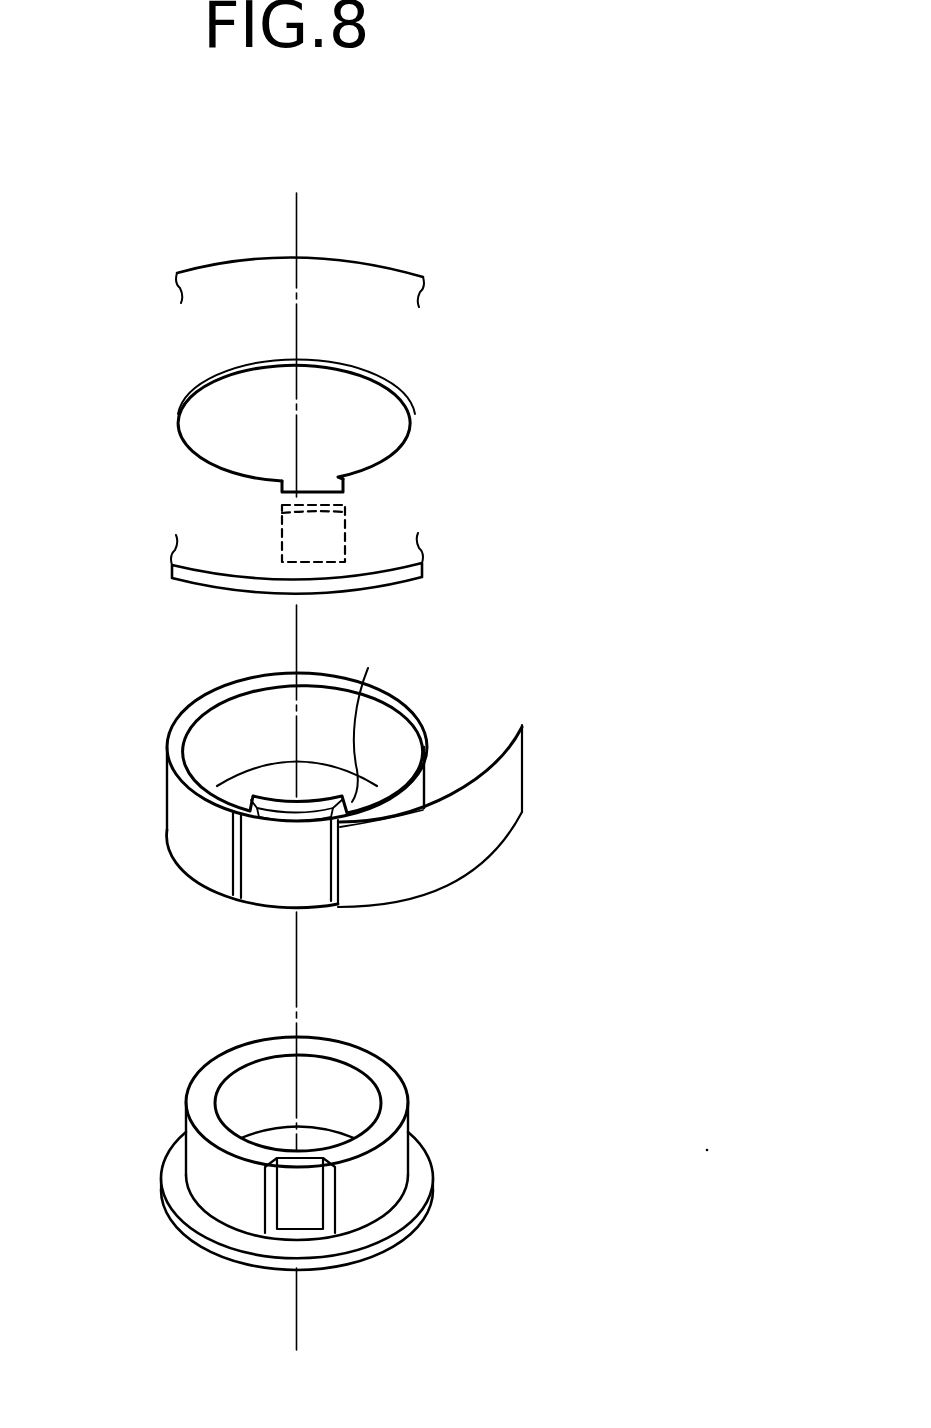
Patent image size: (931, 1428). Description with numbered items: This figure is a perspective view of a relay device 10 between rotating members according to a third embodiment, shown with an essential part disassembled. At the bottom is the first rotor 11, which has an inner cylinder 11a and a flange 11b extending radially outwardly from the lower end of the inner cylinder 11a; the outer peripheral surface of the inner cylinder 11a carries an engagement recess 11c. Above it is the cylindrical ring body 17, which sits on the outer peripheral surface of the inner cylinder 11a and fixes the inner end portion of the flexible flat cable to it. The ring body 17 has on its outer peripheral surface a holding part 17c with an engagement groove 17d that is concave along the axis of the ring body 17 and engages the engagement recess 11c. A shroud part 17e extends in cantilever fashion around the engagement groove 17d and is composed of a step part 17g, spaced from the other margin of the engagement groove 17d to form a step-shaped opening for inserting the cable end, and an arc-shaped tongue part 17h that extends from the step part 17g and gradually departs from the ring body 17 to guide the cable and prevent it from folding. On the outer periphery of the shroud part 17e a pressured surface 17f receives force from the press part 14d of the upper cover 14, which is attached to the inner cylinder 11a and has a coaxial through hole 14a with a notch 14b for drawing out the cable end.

The relay device 10 is at (503, 358).
The upper cover 14 is at (375, 262).
The through hole 14a is at (197, 455).
The notch 14b is at (313, 492).
The press part 14d is at (347, 528).
The ring body 17 is at (413, 714).
The holding part 17c is at (268, 900).
The engagement groove 17d is at (272, 812).
The shroud part 17e is at (268, 853).
The pressured surface 17f is at (310, 892).
The step part 17g is at (340, 876).
The tongue part 17h is at (523, 775).
The first rotor 11 is at (440, 1187).
The inner cylinder 11a is at (193, 1157).
The flange 11b is at (188, 1208).
The engagement recess 11c is at (303, 1215).